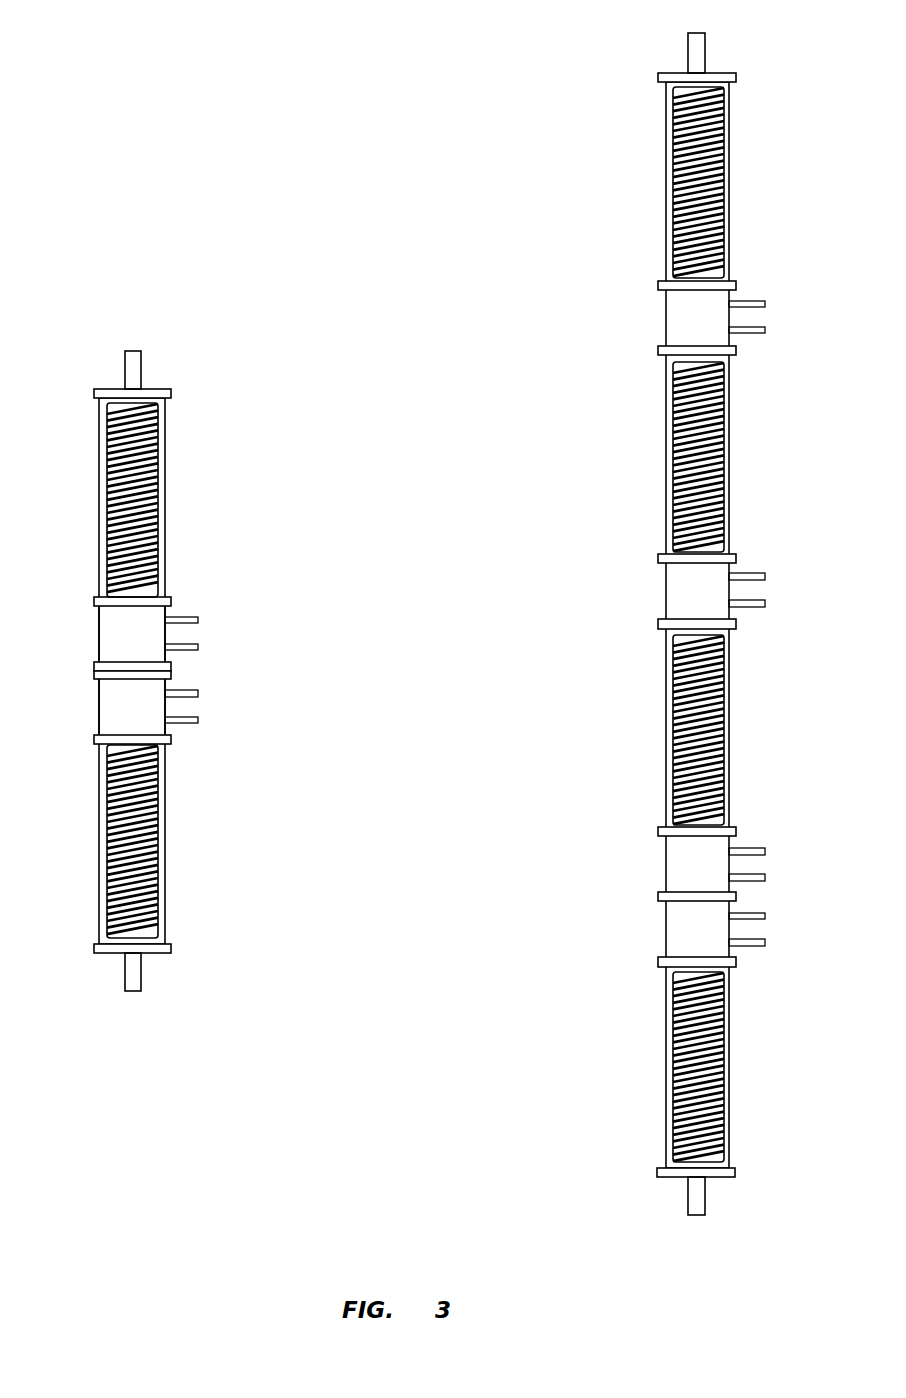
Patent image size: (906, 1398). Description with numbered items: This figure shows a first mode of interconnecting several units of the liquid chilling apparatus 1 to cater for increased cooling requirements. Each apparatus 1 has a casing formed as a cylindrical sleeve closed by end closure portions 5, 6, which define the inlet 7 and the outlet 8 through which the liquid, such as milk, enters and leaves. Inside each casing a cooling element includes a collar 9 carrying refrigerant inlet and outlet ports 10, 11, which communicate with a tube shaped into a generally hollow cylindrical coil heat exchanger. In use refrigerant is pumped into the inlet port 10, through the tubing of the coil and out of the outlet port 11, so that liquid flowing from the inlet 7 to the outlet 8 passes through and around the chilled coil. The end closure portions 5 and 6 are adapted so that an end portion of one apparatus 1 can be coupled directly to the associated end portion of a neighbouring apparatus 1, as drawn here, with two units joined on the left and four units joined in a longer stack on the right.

The apparatus 1 is at (205, 458).
The end closure portion 5 is at (158, 953).
The end closure portion 6 is at (100, 389).
The inlet 7 is at (142, 985).
The outlet 8 is at (142, 361).
The collar 9 is at (105, 639).
The refrigerant inlet port 10 is at (188, 617).
The refrigerant outlet port 11 is at (192, 651).